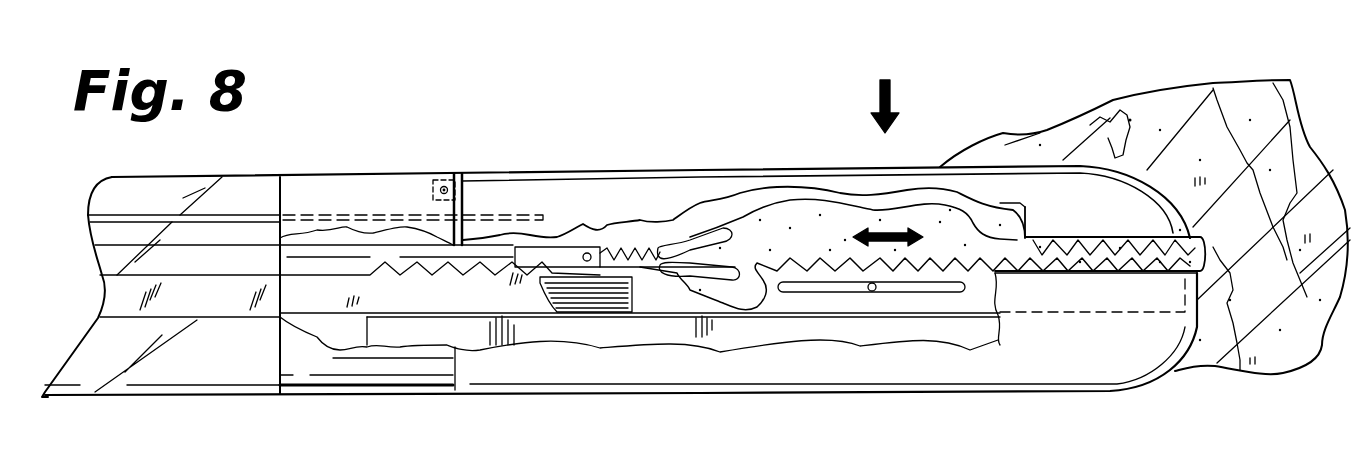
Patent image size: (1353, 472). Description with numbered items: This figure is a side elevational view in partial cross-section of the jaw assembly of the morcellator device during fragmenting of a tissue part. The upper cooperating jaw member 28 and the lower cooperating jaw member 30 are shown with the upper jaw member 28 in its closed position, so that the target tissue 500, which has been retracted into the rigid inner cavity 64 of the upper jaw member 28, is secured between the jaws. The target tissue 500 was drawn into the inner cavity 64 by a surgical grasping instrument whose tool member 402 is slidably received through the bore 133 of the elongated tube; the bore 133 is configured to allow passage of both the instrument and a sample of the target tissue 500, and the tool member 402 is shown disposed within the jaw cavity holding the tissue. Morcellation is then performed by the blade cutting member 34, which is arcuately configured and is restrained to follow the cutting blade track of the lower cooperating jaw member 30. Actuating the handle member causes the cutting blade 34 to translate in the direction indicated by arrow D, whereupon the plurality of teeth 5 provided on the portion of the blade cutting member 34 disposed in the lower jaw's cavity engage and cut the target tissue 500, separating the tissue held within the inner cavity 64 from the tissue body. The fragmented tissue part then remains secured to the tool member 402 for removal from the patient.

The teeth 5 is at (1053, 270).
The upper cooperating jaw member 28 is at (695, 170).
The lower cooperating jaw member 30 is at (858, 365).
The blade cutting member 34 is at (317, 300).
The inner cavity portion 64 is at (976, 200).
The bore 133 is at (347, 227).
The tool member 402 is at (652, 270).
The target tissue 500 is at (1170, 95).
The arrow D is at (878, 225).